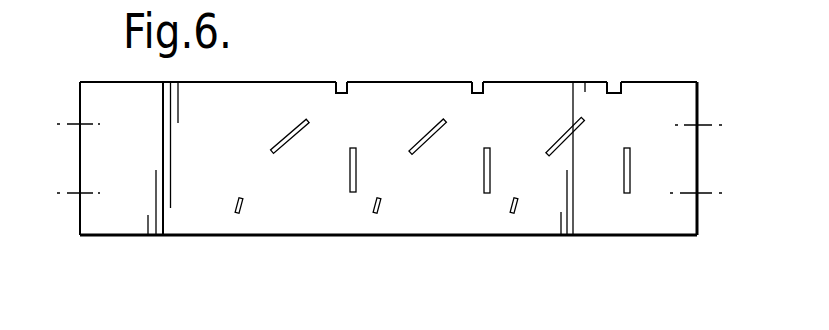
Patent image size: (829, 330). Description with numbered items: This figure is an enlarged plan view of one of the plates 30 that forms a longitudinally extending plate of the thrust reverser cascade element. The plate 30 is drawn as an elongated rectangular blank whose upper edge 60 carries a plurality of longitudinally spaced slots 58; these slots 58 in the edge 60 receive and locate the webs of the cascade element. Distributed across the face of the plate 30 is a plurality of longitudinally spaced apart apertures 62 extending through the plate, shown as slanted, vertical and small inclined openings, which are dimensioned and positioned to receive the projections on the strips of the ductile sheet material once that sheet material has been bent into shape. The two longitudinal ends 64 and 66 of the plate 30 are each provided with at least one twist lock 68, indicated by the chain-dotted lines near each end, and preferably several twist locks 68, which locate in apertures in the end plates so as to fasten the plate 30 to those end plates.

The plate 30 is at (308, 218).
The slots 58 is at (475, 82).
The edge 60 is at (278, 82).
The apertures 62 is at (285, 143).
The longitudinal end 64 is at (697, 105).
The longitudinal end 66 is at (80, 100).
The twist lock 68 is at (80, 124).